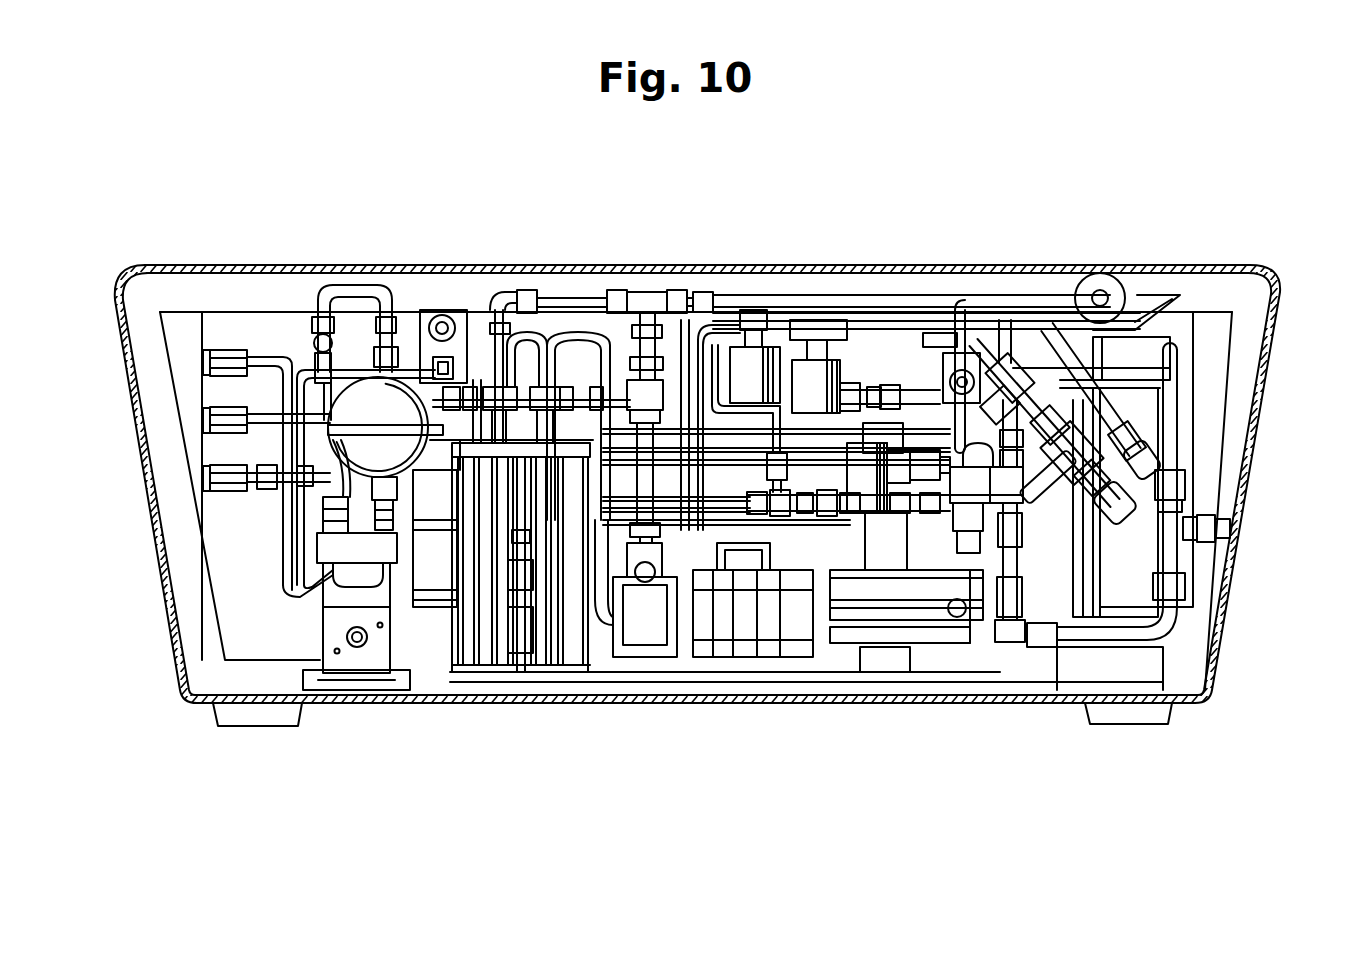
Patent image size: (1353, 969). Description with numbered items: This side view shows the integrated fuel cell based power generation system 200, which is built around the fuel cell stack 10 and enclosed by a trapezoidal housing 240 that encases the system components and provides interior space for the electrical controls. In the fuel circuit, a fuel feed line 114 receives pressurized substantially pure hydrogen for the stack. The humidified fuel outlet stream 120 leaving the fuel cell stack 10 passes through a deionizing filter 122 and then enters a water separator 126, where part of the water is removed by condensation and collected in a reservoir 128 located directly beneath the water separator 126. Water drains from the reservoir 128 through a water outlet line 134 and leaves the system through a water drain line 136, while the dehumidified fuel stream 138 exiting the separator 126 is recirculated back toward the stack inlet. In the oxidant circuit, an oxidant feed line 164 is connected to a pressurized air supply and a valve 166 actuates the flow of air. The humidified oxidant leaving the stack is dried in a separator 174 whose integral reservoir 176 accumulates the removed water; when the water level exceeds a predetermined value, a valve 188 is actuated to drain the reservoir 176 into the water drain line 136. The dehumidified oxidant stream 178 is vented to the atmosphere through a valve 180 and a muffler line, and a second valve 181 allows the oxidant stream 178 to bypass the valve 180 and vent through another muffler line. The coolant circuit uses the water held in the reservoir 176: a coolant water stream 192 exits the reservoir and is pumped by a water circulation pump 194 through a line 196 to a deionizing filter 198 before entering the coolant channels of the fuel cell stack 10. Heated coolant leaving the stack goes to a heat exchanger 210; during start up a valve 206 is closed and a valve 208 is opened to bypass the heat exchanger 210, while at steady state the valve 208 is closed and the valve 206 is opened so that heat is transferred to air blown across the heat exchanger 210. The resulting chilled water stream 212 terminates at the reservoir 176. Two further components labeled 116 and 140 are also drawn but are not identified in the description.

The fuel cell stack 10 is at (443, 550).
The fuel feed line 114 is at (203, 420).
The valve assembly 116 is at (858, 485).
The humidified fuel outlet stream 120 is at (905, 383).
The deionizing filter 122 is at (715, 380).
The water separator 126 is at (447, 323).
The reservoir 128 is at (365, 453).
The water outlet line 134 is at (315, 580).
The water drain line 136 is at (213, 480).
The dehumidified fuel stream 138 is at (353, 285).
The pump motor mount 140 is at (358, 650).
The oxidant feed line 164 is at (203, 362).
The valve 166 is at (743, 565).
The separator 174 is at (560, 572).
The reservoir 176 is at (568, 648).
The dehumidified oxidant stream 178 is at (947, 640).
The valve 180 is at (1187, 555).
The second valve 181 is at (1020, 490).
The valve 188 is at (455, 305).
The coolant water stream 192 is at (578, 300).
The water circulation pump 194 is at (648, 620).
The line 196 is at (1018, 297).
The deionizing filter 198 is at (1105, 285).
The integrated fuel cell based power generation system 200 is at (104, 289).
The valve 206 is at (1140, 380).
The valve 208 is at (973, 353).
The heat exchanger 210 is at (1143, 363).
The chilled water stream 212 is at (1168, 485).
The trapezoidal housing 240 is at (160, 283).